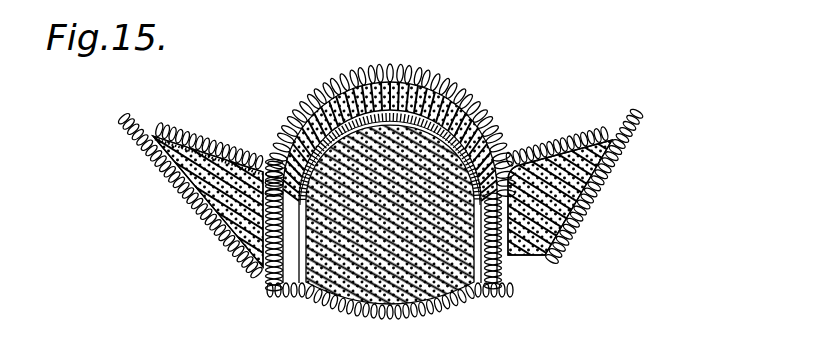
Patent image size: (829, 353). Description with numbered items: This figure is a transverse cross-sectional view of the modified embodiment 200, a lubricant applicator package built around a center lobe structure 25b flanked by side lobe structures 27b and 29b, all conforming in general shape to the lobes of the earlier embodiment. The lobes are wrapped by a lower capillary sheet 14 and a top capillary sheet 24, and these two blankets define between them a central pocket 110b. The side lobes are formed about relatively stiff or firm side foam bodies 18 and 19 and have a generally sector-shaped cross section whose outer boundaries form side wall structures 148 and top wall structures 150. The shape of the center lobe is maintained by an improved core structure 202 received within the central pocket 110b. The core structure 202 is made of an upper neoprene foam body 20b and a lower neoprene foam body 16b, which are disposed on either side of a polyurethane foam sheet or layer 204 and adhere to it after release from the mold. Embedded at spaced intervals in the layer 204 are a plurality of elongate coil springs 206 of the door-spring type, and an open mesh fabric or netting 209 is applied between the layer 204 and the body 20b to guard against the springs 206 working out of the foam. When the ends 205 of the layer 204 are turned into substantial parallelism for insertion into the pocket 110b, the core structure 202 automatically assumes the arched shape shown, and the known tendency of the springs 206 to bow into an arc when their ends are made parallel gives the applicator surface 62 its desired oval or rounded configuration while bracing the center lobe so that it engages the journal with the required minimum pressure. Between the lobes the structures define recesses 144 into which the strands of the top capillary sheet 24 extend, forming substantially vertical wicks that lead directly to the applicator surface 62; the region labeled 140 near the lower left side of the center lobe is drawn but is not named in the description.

The lower capillary sheet 14 is at (150, 172).
The side foam body 18 is at (195, 243).
The side foam body 19 is at (553, 241).
The upper neoprene foam body 20b is at (418, 80).
The top capillary sheet 24 is at (187, 112).
The center lobe structure 25b is at (352, 316).
The side lobe structure 27b is at (180, 210).
The side lobe structure 29b is at (627, 205).
The applicator surface 62 is at (386, 68).
The central pocket 110b is at (316, 95).
The lower left fringe loops 140 is at (228, 268).
The recesses 144 is at (258, 290).
The side wall structures 148 is at (244, 158).
The top wall structures 150 is at (197, 133).
The embodiment 200 is at (124, 150).
The core structure 202 is at (486, 120).
The polyurethane foam sheet or layer 204 is at (500, 150).
The ends of layer 205 is at (300, 306).
The coil springs 206 is at (479, 108).
The open mesh fabric or netting 209 is at (457, 103).
The lower neoprene foam body 16b is at (430, 306).